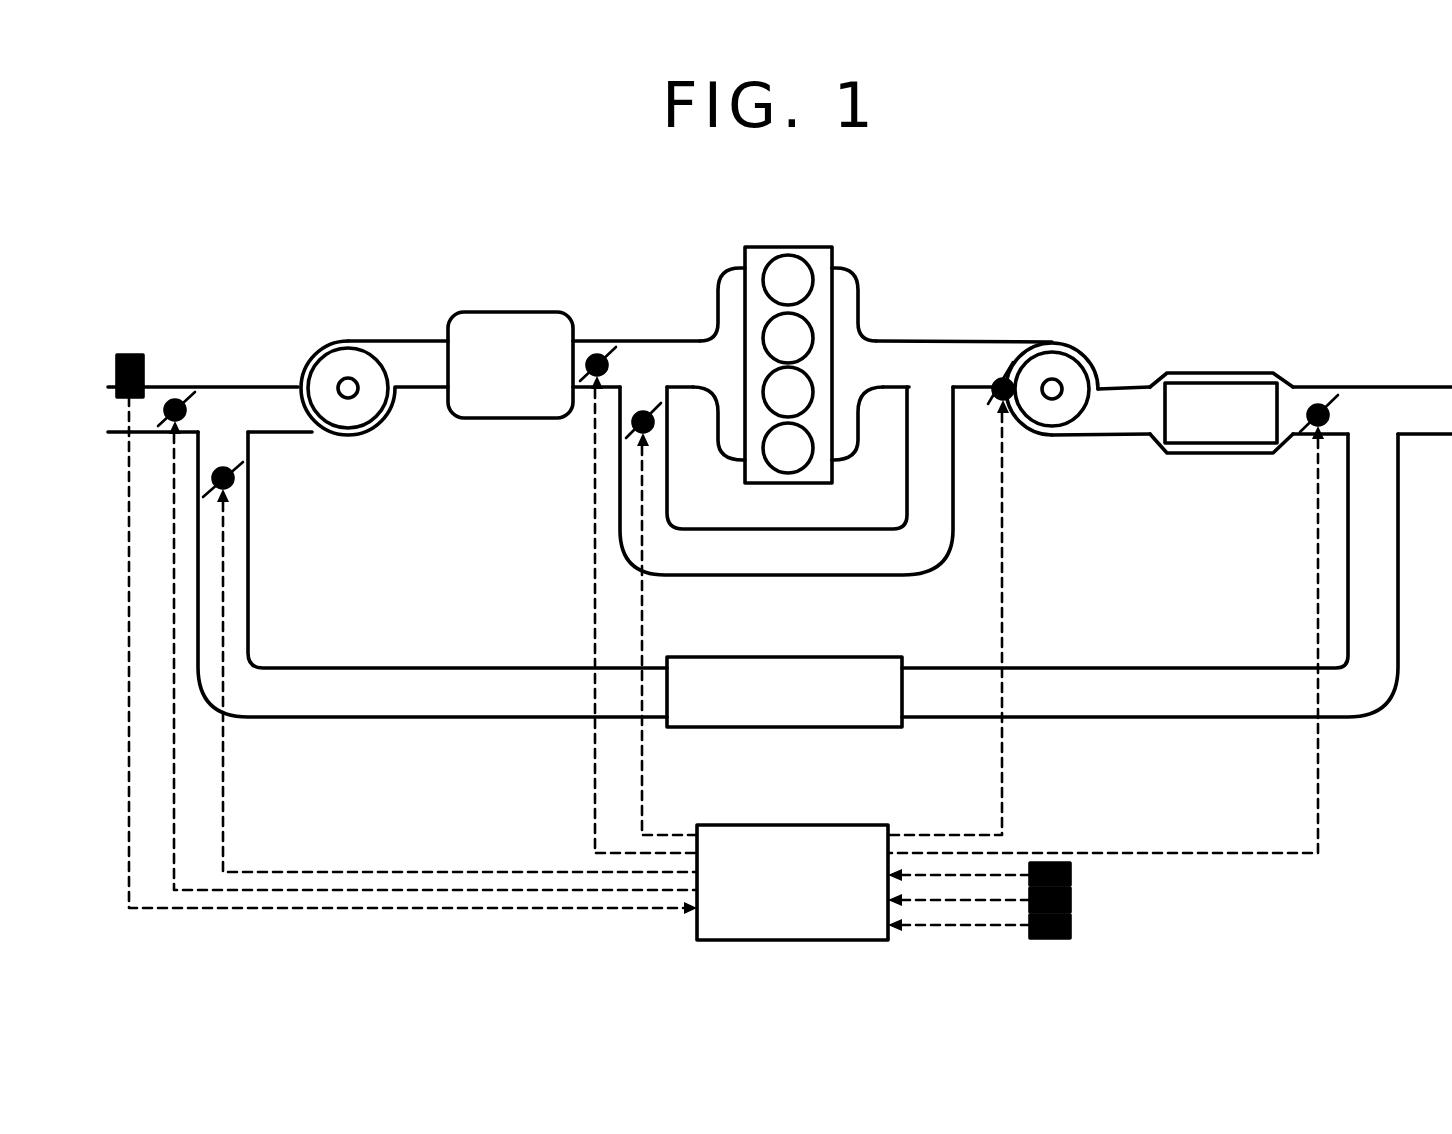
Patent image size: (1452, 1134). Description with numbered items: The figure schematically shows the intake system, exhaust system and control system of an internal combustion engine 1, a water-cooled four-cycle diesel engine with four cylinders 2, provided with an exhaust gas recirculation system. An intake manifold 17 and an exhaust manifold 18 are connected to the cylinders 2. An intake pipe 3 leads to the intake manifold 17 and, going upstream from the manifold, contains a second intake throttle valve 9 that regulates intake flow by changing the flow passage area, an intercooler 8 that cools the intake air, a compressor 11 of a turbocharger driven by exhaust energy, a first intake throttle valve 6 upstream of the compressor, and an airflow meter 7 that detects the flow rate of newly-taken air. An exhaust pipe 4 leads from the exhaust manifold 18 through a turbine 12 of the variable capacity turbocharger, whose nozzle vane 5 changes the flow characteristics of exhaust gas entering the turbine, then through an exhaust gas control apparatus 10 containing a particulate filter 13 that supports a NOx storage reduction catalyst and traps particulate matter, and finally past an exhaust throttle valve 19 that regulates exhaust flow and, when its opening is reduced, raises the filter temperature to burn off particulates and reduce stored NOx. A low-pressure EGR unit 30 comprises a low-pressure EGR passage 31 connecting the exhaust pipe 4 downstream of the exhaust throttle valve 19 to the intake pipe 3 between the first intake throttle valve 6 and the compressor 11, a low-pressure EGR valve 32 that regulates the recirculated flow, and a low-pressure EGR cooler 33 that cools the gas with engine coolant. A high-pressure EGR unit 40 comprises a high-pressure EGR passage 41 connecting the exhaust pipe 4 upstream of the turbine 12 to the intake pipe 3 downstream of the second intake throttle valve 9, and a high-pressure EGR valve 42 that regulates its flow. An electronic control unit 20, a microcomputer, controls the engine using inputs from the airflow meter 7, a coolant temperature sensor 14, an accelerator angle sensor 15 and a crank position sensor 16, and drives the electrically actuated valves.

The internal combustion engine 1 is at (655, 232).
The cylinders 2 is at (795, 262).
The intake pipe 3 is at (244, 386).
The exhaust pipe 4 is at (935, 340).
The nozzle vane 5 is at (992, 400).
The first intake throttle valve 6 is at (176, 399).
The airflow meter 7 is at (130, 355).
The intercooler 8 is at (503, 312).
The second intake throttle valve 9 is at (597, 355).
The exhaust gas control apparatus 10 is at (1257, 372).
The compressor 11 is at (348, 343).
The turbine 12 is at (1045, 345).
The particulate filter 13 is at (1196, 382).
The coolant temperature sensor 14 is at (1072, 875).
The accelerator angle sensor 15 is at (1072, 900).
The crank position sensor 16 is at (1072, 927).
The intake manifold 17 is at (718, 275).
The exhaust manifold 18 is at (862, 272).
The exhaust throttle valve 19 is at (1322, 403).
The electronic control unit 20 is at (840, 825).
The low-pressure EGR unit 30 is at (1112, 652).
The low-pressure EGR passage 31 is at (1270, 667).
The low-pressure EGR valve 32 is at (234, 478).
The low-pressure EGR cooler 33 is at (742, 728).
The high-pressure EGR unit 40 is at (938, 582).
The high-pressure EGR passage 41 is at (817, 577).
The high-pressure EGR valve 42 is at (655, 432).